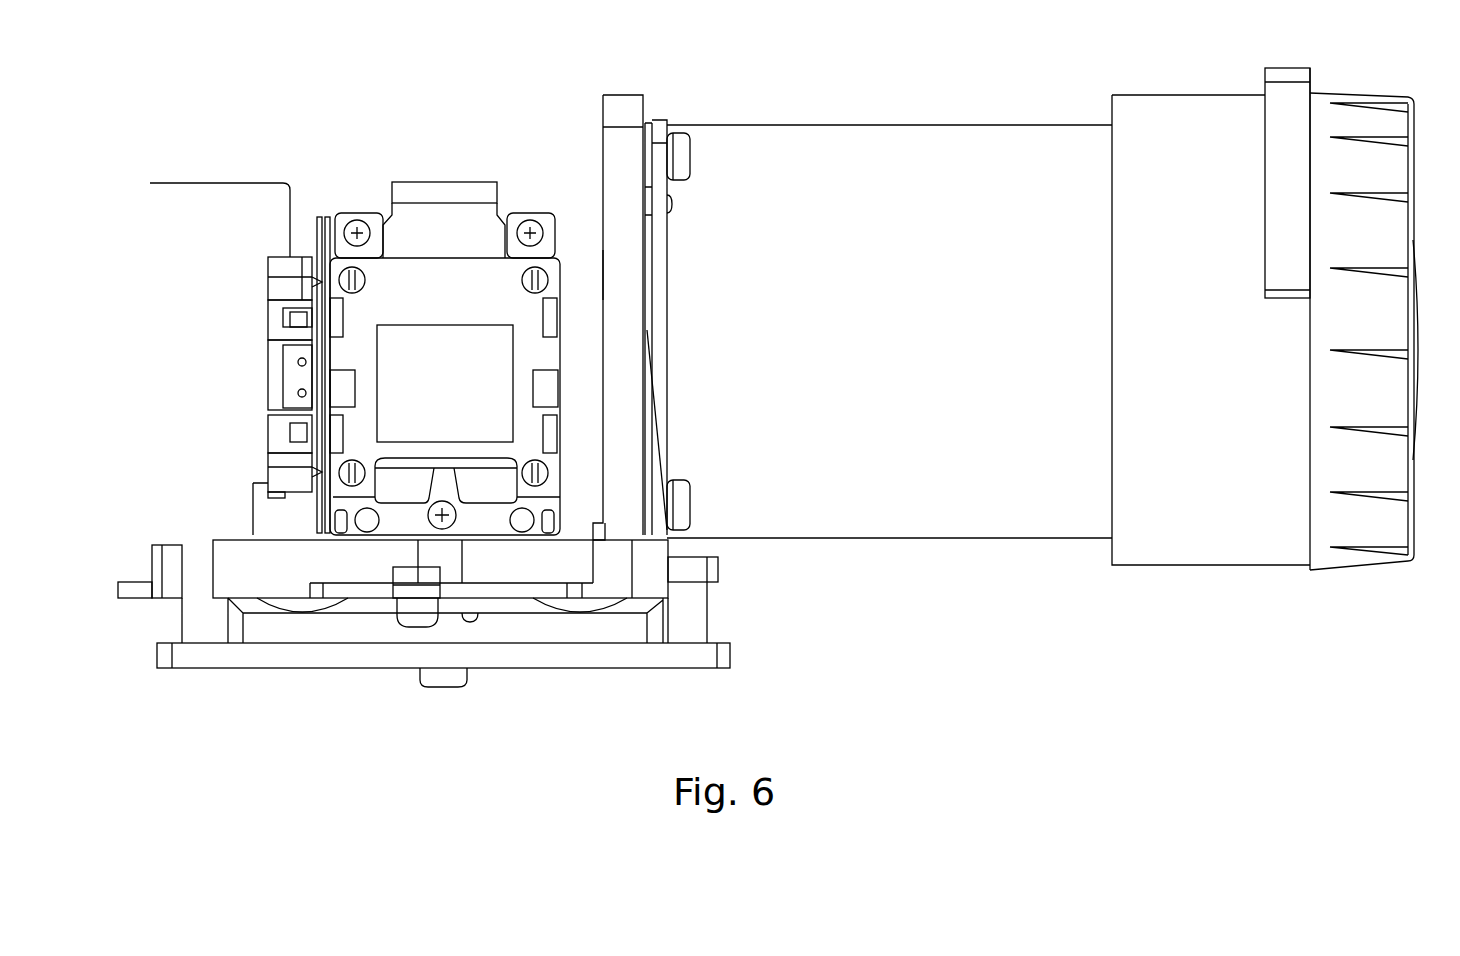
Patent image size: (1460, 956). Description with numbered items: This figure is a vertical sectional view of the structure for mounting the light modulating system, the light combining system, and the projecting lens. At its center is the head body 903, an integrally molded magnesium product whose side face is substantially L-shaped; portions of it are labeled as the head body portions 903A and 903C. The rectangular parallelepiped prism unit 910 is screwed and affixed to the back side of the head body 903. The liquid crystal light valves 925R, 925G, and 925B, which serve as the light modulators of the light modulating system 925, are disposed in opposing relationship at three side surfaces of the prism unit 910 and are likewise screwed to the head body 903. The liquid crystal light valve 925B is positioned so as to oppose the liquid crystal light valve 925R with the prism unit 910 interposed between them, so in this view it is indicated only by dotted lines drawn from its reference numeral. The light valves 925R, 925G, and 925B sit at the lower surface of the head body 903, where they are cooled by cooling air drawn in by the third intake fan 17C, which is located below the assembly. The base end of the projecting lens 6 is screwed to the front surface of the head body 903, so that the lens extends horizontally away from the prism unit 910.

The projecting lens 6 is at (822, 163).
The third intake fan 17C is at (588, 655).
The head body 903 is at (603, 167).
The plate upper portion 903A is at (603, 288).
The plate foot portion 903C is at (570, 533).
The prism unit 910 is at (512, 181).
The light modulating system 925 is at (480, 86).
The liquid crystal light valve 925G is at (267, 357).
The liquid crystal light valve 925R is at (407, 340).
The liquid crystal light valve 925B is at (467, 335).